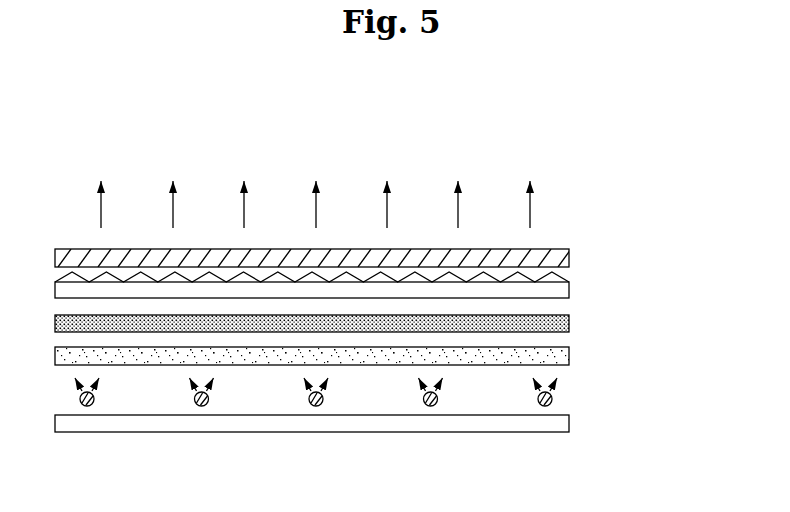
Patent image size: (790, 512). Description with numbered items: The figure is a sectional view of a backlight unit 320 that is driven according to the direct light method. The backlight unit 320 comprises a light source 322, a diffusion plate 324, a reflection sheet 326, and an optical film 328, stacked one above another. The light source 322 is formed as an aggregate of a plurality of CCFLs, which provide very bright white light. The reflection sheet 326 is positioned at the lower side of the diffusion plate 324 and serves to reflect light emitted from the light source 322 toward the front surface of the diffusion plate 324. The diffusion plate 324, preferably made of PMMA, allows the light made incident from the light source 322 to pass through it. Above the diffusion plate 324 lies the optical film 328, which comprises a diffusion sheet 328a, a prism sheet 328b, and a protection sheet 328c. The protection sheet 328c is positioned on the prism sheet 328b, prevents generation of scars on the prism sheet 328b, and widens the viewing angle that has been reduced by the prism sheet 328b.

The backlight unit 320 is at (529, 152).
The optical film 328 is at (700, 328).
The protection sheet 328c is at (569, 255).
The prism sheet 328b is at (569, 291).
The diffusion sheet 328a is at (569, 322).
The diffusion plate 324 is at (569, 355).
The light source 322 is at (552, 397).
The reflection sheet 326 is at (569, 422).